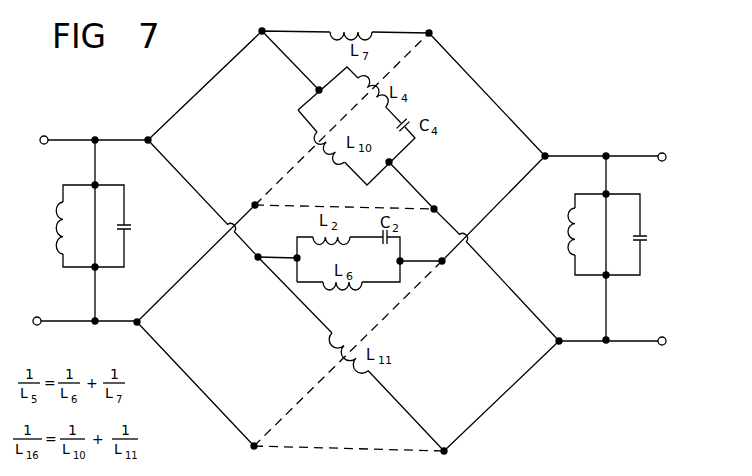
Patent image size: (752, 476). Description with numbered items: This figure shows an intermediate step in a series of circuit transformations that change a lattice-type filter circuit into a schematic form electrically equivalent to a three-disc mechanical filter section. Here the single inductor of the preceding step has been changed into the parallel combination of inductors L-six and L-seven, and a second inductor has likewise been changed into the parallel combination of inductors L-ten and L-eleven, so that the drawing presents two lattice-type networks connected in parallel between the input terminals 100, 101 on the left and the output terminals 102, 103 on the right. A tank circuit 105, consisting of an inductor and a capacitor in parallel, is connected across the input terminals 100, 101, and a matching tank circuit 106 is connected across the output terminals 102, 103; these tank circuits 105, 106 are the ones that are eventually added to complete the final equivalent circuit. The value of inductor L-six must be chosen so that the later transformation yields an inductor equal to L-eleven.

The input terminal 100 is at (48, 136).
The input terminal 101 is at (42, 326).
The output terminal 102 is at (659, 153).
The output terminal 103 is at (657, 347).
The tank circuit 105 is at (105, 195).
The tank circuit 106 is at (622, 206).